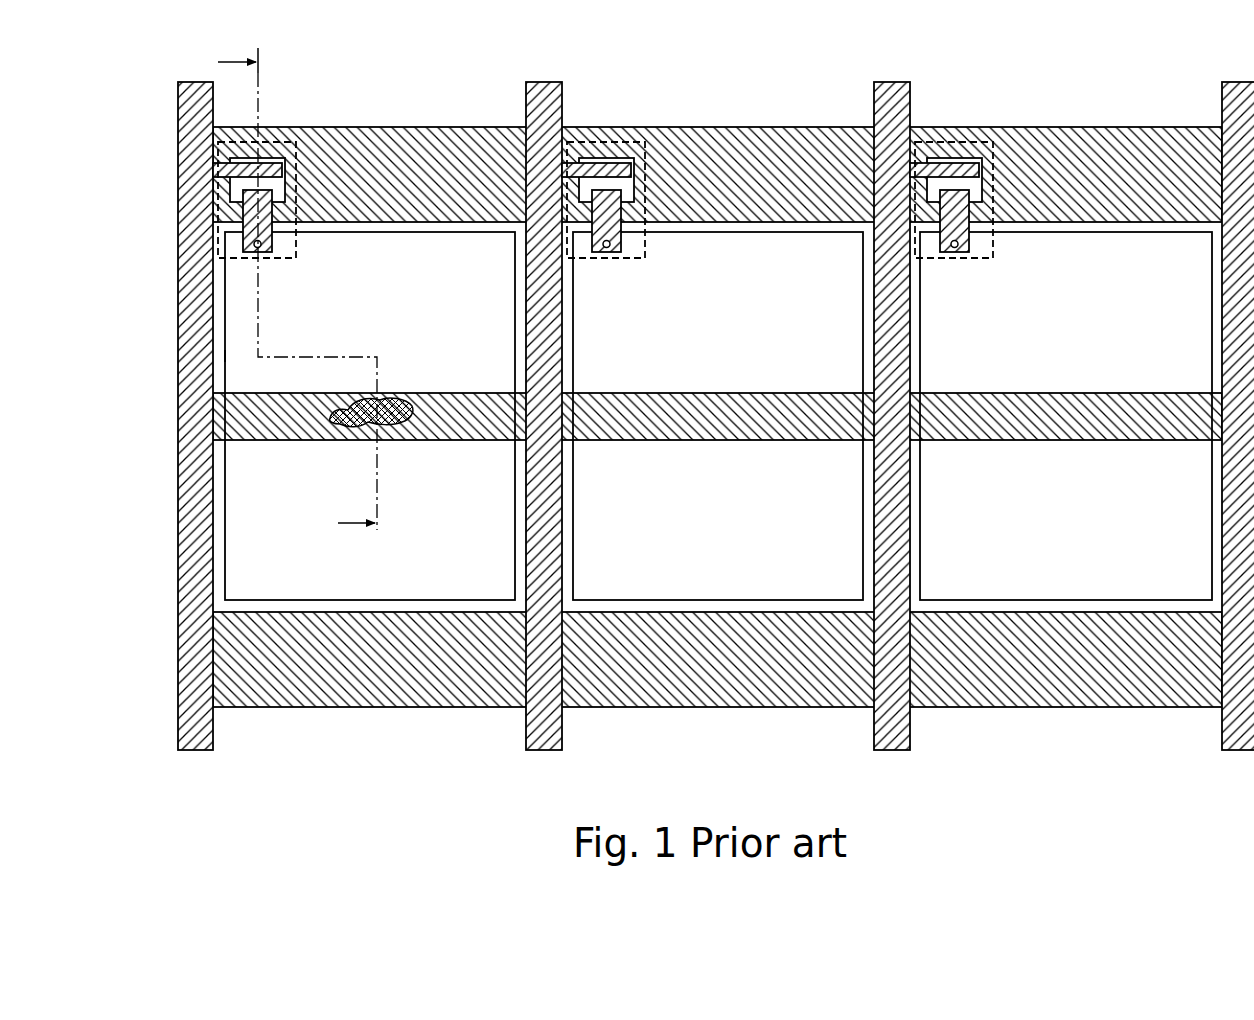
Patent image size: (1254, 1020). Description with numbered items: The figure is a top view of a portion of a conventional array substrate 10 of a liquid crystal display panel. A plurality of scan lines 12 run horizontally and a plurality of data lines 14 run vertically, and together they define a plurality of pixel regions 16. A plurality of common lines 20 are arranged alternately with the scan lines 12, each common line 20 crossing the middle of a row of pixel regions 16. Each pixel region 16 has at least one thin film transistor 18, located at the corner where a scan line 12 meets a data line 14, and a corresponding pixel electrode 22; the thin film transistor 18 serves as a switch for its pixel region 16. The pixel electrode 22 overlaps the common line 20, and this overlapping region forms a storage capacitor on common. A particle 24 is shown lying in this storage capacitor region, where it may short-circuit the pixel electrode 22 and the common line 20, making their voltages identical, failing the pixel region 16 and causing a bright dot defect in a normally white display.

The array substrate 10 is at (682, 384).
The scan line 12 is at (412, 155).
The data line 14 is at (185, 114).
The pixel region 16 is at (378, 329).
The thin film transistor 18 is at (290, 140).
The common line 20 is at (233, 418).
The pixel electrode 22 is at (238, 355).
The particle 24 is at (348, 433).